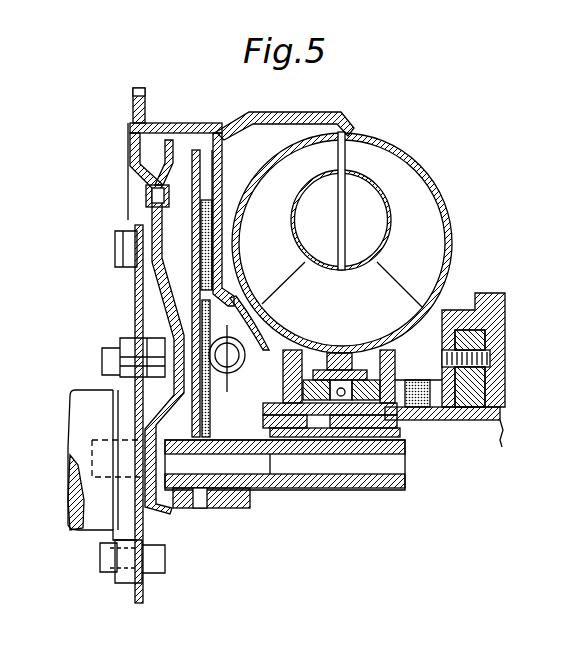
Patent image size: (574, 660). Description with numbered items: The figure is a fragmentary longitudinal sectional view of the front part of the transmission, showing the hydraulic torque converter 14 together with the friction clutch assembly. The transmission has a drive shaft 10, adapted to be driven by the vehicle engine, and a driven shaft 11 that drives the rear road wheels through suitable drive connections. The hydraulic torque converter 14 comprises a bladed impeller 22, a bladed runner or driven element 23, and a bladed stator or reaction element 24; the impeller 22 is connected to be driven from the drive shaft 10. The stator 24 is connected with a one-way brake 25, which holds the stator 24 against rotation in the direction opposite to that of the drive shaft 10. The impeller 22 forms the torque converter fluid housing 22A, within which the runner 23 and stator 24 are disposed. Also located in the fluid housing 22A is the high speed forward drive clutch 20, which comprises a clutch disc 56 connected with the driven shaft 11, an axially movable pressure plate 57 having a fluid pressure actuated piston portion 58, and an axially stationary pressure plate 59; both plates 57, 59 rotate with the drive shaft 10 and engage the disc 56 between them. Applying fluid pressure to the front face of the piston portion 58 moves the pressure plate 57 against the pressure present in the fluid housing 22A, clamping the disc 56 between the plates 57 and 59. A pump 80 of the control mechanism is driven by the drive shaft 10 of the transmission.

The drive shaft 10 is at (77, 400).
The driven shaft 11 is at (381, 490).
The hydraulic torque converter 14 is at (446, 172).
The high speed forward drive clutch 20 is at (207, 158).
The bladed impeller 22 is at (425, 224).
The torque converter fluid housing 22A is at (298, 113).
The bladed runner 23 is at (272, 228).
The bladed stator 24 is at (346, 294).
The one-way brake 25 is at (340, 375).
The clutch disc 56 is at (214, 260).
The axially movable pressure plate 57 is at (192, 170).
The piston portion 58 is at (157, 321).
The axially stationary pressure plate 59 is at (212, 190).
The pump 80 is at (465, 299).